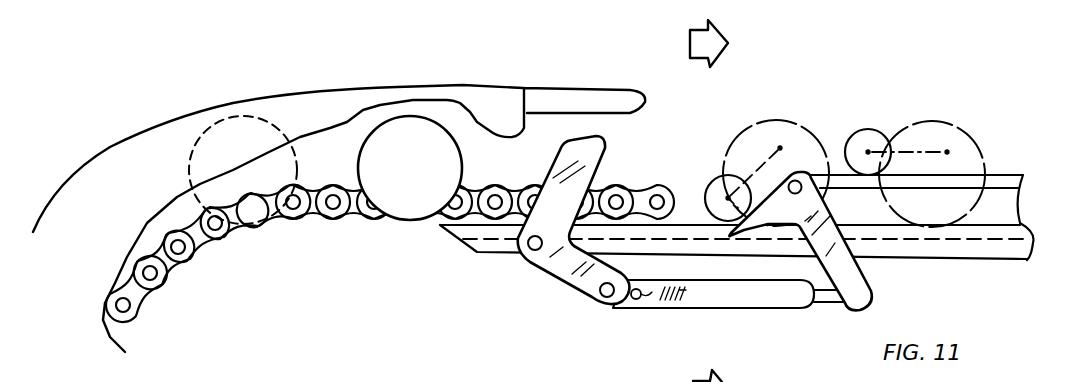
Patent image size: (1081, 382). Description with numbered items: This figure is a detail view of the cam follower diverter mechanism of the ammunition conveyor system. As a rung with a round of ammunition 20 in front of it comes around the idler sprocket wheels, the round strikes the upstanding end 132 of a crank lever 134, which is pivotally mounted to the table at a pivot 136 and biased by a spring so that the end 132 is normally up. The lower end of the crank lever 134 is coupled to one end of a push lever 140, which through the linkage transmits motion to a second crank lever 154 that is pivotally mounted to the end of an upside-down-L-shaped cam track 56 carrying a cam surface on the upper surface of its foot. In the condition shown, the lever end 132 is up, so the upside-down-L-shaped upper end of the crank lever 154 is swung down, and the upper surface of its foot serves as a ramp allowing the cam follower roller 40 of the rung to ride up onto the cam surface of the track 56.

The round of ammunition 20 is at (467, 160).
The cam follower roller 40 is at (718, 182).
The cam track 56 is at (1000, 197).
The upstanding end 132 is at (543, 204).
The crank lever 134 is at (550, 270).
The pivot 136 is at (530, 247).
The push lever 140 is at (707, 306).
The crank lever 154 is at (847, 265).